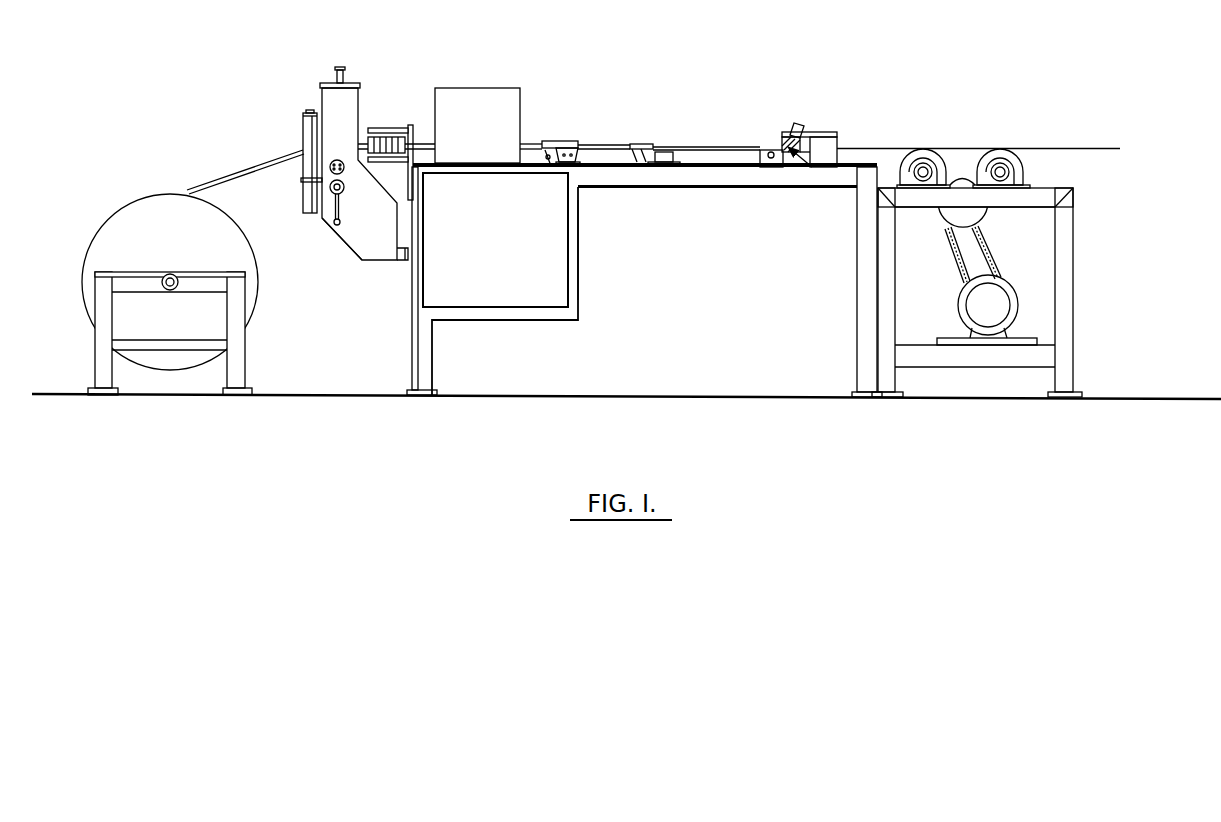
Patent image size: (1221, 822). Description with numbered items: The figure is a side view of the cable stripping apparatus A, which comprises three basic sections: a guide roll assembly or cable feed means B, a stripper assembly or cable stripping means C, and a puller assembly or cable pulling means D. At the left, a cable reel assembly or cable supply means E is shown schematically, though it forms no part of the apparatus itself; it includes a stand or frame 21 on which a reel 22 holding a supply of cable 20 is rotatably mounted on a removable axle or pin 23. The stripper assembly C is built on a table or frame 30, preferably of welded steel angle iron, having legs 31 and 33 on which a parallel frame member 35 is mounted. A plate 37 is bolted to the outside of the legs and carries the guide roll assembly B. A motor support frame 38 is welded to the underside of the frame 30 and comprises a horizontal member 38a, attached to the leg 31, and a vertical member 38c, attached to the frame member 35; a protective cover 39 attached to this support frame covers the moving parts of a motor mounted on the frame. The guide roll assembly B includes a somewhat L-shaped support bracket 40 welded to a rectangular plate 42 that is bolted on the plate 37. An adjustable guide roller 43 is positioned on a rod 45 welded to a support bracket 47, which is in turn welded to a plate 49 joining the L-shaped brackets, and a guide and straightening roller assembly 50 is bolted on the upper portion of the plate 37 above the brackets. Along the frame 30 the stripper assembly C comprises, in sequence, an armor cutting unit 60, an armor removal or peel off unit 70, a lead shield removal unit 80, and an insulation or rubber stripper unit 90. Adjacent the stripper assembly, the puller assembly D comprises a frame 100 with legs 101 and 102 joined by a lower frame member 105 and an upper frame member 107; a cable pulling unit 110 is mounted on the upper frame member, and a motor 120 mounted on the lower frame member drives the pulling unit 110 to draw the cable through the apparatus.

The cable 20 is at (222, 181).
The stand or frame 21 is at (240, 374).
The reel 22 is at (118, 235).
The removable axle or pin 23 is at (168, 291).
The table or frame 30 is at (785, 189).
The leg 31 is at (422, 360).
The leg 33 is at (857, 343).
The frame member 35 is at (592, 175).
The plate 37 is at (410, 288).
The motor support frame 38 is at (581, 295).
The horizontal member 38a is at (505, 314).
The vertical member 38c is at (578, 257).
The protective cover 39 is at (474, 258).
The L-shaped support bracket 40 is at (362, 240).
The rectangular plate 42 is at (408, 257).
The adjustable guide roller 43 is at (305, 138).
The rod 45 is at (310, 111).
The support bracket 47 is at (301, 181).
The plate 49 is at (316, 215).
The guide and straightening roller assembly 50 is at (387, 122).
The armor cutting section or unit 60 is at (475, 86).
The armor removal or peel off unit 70 is at (536, 119).
The lead shield removal unit 80 is at (642, 141).
The insulation or rubber stripper unit 90 is at (815, 129).
The frame 100 is at (1076, 310).
The leg 101 is at (885, 378).
The leg 102 is at (1062, 378).
The lower frame member 105 is at (967, 353).
The upper frame member 107 is at (1042, 197).
The cable pulling unit 110 is at (962, 157).
The motor 120 is at (1008, 287).
The cable stripping apparatus A is at (769, 82).
The guide roll assembly or cable feed means B is at (364, 97).
The stripper assembly or cable stripping means C is at (690, 189).
The puller assembly or cable pulling means D is at (1078, 268).
The cable reel assembly or cable supply means E is at (246, 332).